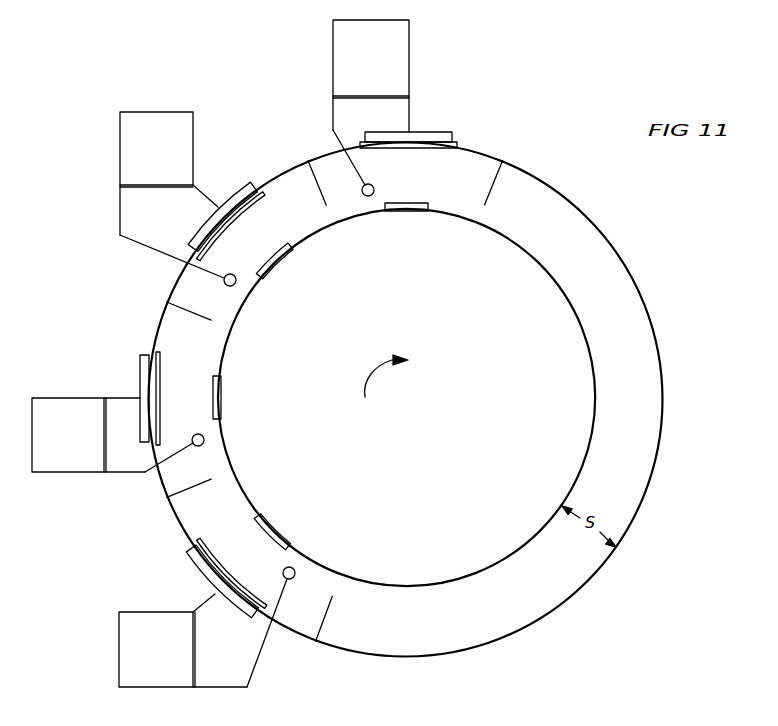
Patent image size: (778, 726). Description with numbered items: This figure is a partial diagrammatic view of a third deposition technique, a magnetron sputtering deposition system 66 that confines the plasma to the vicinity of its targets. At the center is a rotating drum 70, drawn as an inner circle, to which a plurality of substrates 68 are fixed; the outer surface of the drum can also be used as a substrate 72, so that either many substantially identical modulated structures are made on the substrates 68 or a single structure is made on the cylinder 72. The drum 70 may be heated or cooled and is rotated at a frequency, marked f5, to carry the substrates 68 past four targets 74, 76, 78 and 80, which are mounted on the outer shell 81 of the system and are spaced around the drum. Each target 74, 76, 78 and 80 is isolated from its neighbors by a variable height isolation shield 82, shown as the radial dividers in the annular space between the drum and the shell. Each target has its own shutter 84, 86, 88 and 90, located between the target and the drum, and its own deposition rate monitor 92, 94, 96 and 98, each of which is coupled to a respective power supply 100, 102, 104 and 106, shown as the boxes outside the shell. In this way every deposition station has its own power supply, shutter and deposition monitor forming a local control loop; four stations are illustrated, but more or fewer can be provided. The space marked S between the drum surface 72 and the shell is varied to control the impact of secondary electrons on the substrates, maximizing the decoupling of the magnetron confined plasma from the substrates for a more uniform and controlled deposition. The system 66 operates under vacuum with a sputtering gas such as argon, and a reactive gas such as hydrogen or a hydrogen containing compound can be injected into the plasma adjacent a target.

The deposition system 66 is at (670, 250).
The substrates 68 is at (412, 214).
The rotating drum 70 is at (391, 487).
The drum surface 72 is at (597, 378).
The target 74 is at (210, 575).
The target 76 is at (140, 370).
The target 78 is at (236, 193).
The target 80 is at (440, 130).
The shell 81 is at (665, 432).
The variable height isolation shield 82 is at (318, 185).
The shutter 84 is at (218, 565).
The shutter 86 is at (160, 365).
The shutter 88 is at (240, 215).
The shutter 90 is at (418, 150).
The deposition rate monitor 92 is at (296, 570).
The deposition rate monitor 94 is at (204, 440).
The deposition rate monitor 96 is at (236, 284).
The deposition rate monitor 98 is at (368, 197).
The power supply 100 is at (171, 659).
The power supply 102 is at (84, 446).
The power supply 104 is at (172, 161).
The power supply 106 is at (387, 71).